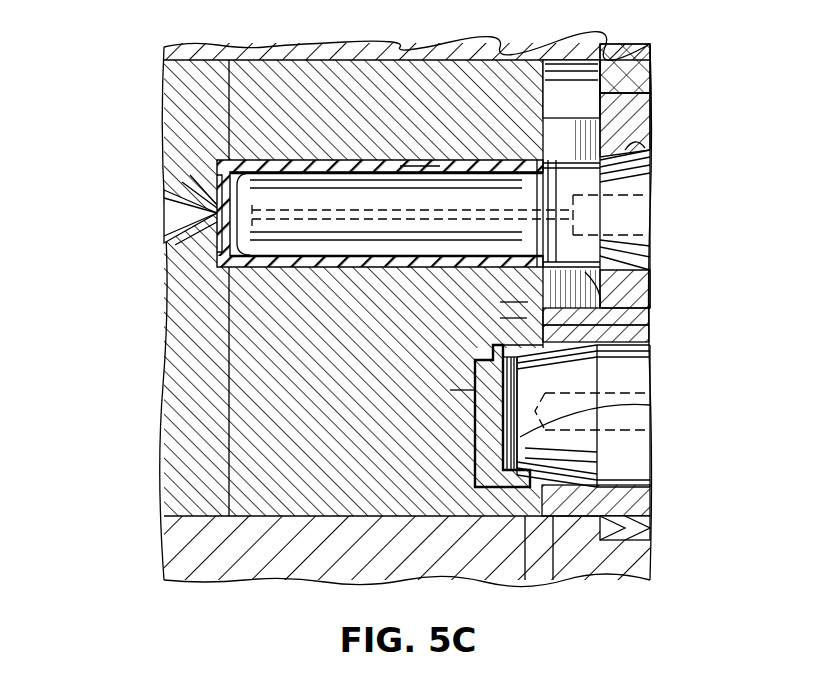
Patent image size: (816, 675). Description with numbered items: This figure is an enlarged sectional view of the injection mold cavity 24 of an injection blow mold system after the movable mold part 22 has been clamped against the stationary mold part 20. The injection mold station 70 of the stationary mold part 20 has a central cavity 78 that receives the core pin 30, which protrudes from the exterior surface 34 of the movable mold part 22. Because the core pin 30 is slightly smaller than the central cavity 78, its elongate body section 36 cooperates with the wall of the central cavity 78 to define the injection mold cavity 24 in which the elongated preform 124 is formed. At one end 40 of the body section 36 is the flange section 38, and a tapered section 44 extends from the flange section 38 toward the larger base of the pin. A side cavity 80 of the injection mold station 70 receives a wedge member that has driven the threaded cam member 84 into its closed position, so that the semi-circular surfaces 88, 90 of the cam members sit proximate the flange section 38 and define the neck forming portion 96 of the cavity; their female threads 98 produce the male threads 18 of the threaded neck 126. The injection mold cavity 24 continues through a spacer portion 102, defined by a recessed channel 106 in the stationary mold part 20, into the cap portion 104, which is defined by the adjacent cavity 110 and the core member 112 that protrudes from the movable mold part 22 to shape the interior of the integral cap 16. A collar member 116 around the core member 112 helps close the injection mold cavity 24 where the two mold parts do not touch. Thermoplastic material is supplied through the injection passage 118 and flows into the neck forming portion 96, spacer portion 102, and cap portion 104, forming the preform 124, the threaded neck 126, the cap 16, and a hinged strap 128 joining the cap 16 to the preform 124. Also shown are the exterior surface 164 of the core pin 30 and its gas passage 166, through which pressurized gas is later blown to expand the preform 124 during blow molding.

The integral cap 16 is at (518, 487).
The threads 18 is at (630, 303).
The stationary mold part 20 is at (165, 476).
The movable mold part 22 is at (650, 492).
The injection mold cavity 24 is at (217, 257).
The core pin 30 is at (648, 197).
The exterior surface 34 is at (597, 530).
The elongate body section 36 is at (265, 183).
The flange section 38 is at (560, 173).
The end of the body section 40 is at (540, 163).
The tapered section 44 is at (648, 136).
The injection mold station 70 is at (200, 162).
The central cavity 78 is at (418, 162).
The side cavity 80 is at (570, 98).
The threaded cam member 84 is at (637, 45).
The semi-circular surface 88 is at (630, 173).
The semi-circular surface 90 is at (635, 268).
The neck forming portion 96 is at (563, 252).
The female threads 98 is at (635, 245).
The spacer portion 102 is at (528, 302).
The cap portion 104 is at (475, 390).
The recessed channel 106 is at (523, 352).
The adjacent cavity 110 is at (630, 438).
The core member 112 is at (648, 415).
The collar member 116 is at (554, 520).
The injection passage 118 is at (164, 212).
The elongated preform 124 is at (213, 191).
The threaded neck 126 is at (583, 150).
The hinged strap 128 is at (527, 318).
The exterior surface of the core pin 164 is at (313, 165).
The gas passage 166 is at (362, 210).